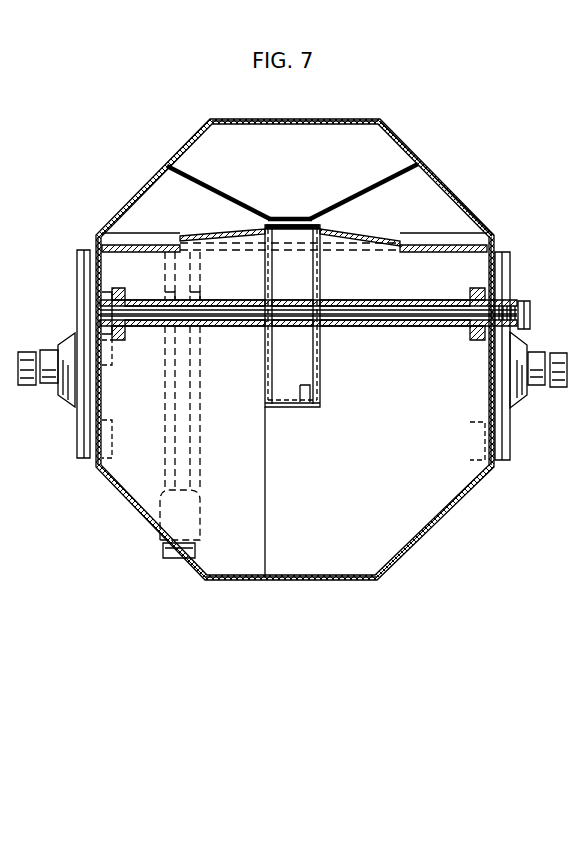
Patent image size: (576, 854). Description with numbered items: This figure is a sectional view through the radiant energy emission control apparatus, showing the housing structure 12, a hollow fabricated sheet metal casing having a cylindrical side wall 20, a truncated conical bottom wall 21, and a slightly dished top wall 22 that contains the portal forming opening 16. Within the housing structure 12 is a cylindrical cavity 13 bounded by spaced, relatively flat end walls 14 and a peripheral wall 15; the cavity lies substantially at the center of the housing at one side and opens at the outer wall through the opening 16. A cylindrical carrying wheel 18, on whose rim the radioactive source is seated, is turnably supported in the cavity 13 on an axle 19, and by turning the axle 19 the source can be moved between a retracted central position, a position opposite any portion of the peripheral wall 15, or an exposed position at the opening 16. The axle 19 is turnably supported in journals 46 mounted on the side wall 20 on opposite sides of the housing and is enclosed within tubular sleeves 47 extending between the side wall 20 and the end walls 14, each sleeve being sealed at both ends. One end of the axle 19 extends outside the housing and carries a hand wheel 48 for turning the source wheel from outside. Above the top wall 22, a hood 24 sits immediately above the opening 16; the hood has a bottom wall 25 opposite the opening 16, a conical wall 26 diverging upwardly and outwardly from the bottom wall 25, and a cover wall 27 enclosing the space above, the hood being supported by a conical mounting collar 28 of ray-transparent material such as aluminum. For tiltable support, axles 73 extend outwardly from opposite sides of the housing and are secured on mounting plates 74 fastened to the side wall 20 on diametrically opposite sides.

The housing structure 12 is at (137, 508).
The cavity 13 is at (306, 404).
The end walls 14 is at (319, 283).
The peripheral wall 15 is at (272, 409).
The opening 16 is at (324, 226).
The wheel 18 is at (319, 359).
The axle 19 is at (385, 321).
The side wall 20 is at (95, 460).
The bottom wall 21 is at (392, 558).
The top wall 22 is at (415, 244).
The hood 24 is at (398, 128).
The bottom wall 25 is at (293, 216).
The conical wall 26 is at (228, 197).
The cover wall 27 is at (308, 126).
The mounting collar 28 is at (466, 204).
The journals 46 is at (118, 289).
The sleeves 47 is at (236, 299).
The wheel 48 is at (523, 300).
The axles 73 is at (26, 350).
The mounting plates 74 is at (83, 249).